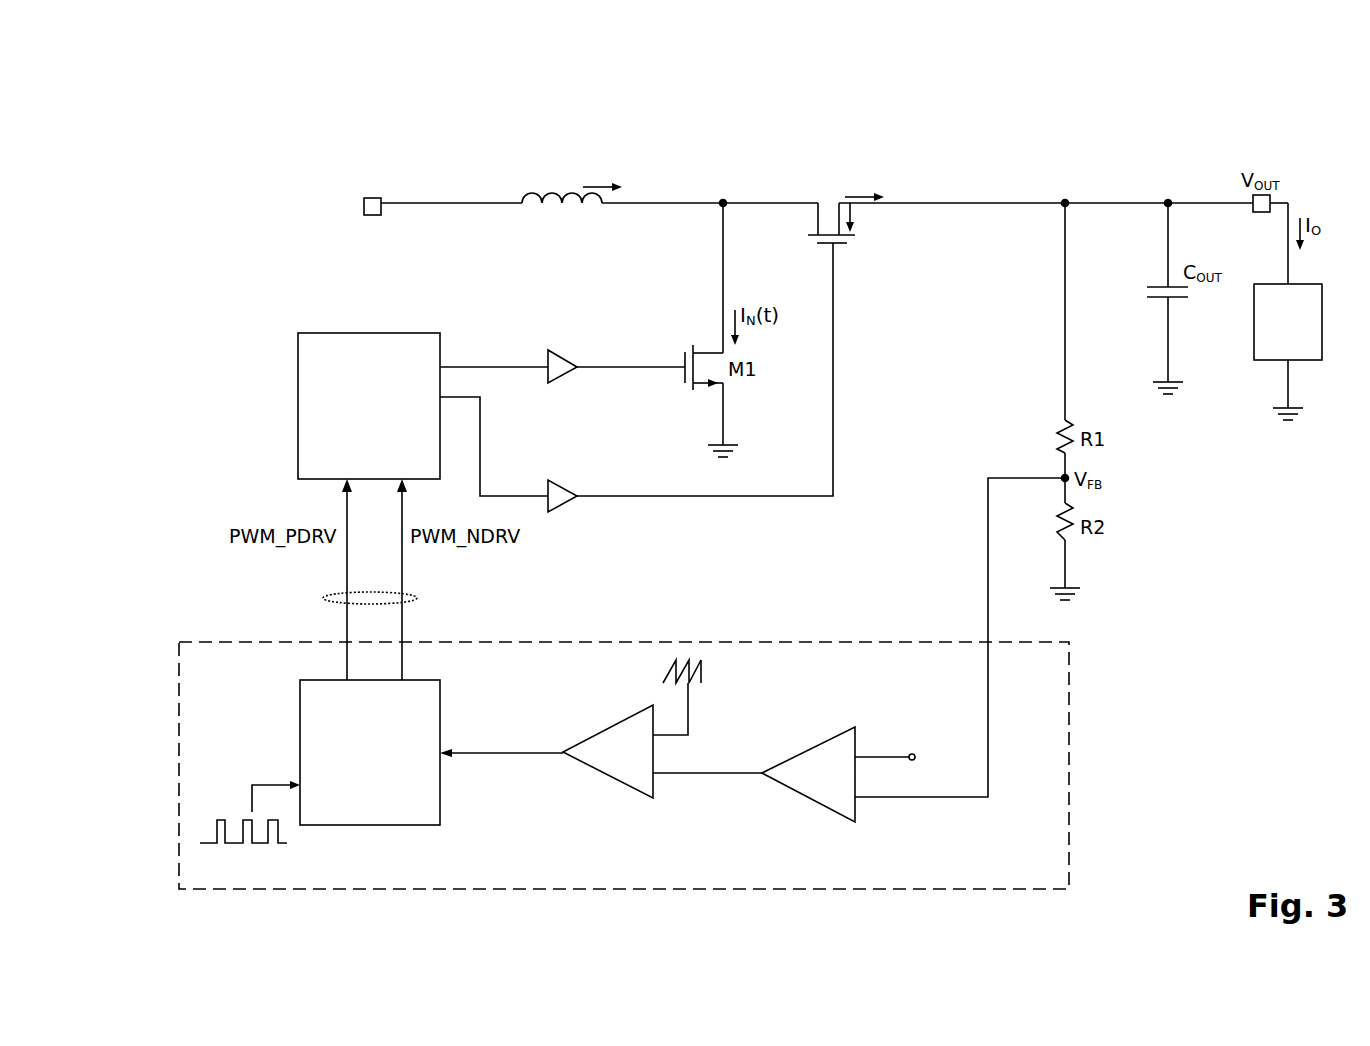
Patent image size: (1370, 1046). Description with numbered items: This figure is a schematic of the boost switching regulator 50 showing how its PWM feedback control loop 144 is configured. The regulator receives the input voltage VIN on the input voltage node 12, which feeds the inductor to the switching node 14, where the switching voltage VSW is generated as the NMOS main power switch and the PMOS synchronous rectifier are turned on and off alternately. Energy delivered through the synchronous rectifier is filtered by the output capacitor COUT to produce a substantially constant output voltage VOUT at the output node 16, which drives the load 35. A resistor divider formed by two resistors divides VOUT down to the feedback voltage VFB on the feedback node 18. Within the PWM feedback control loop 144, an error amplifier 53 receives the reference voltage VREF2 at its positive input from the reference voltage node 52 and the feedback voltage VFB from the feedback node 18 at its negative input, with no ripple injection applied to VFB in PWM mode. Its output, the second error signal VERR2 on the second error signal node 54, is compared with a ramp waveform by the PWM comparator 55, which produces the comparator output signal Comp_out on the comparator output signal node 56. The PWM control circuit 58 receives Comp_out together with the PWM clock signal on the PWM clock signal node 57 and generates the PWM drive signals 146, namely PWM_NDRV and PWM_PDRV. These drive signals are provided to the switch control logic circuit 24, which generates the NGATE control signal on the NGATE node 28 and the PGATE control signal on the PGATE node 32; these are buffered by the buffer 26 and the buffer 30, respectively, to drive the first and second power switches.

The input voltage node 12 is at (371, 198).
The switching node 14 is at (720, 207).
The output node 16 is at (1115, 203).
The feedback node 18 is at (1021, 484).
The switch control logic circuit 24 is at (369, 406).
The buffer 26 is at (563, 378).
The NGATE node 28 is at (632, 370).
The buffer 30 is at (563, 507).
The PGATE node 32 is at (655, 499).
The load 35 is at (1322, 307).
The boost switching regulator 50 is at (1260, 127).
The reference voltage node 52 is at (882, 757).
The error amplifier 53 is at (815, 806).
The second error signal node 54 is at (727, 779).
The PWM comparator 55 is at (615, 785).
The comparator output signal node 56 is at (527, 756).
The PWM clock signal node 57 is at (268, 784).
The PWM control circuit 58 is at (370, 752).
The PWM feedback control loop 144 is at (814, 641).
The PWM drive signals 146 is at (418, 597).